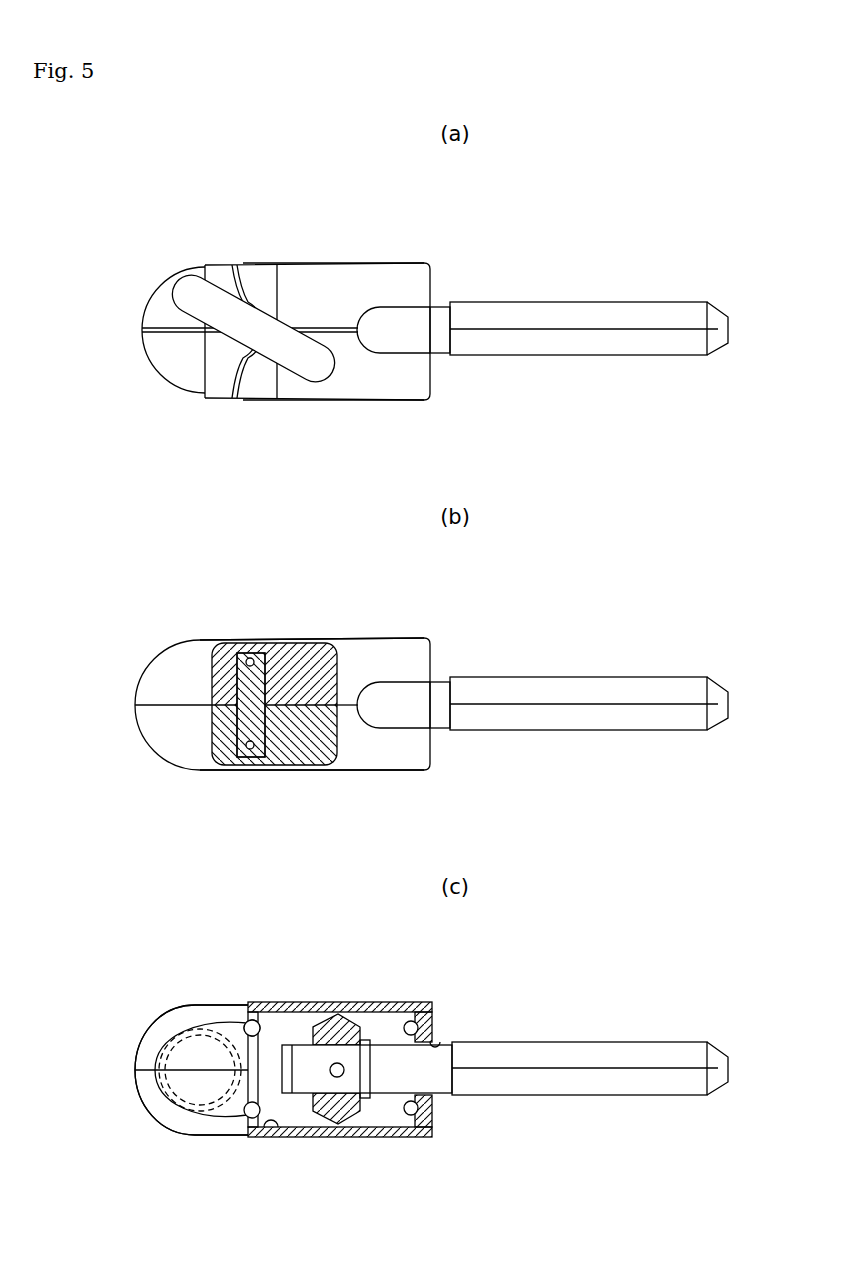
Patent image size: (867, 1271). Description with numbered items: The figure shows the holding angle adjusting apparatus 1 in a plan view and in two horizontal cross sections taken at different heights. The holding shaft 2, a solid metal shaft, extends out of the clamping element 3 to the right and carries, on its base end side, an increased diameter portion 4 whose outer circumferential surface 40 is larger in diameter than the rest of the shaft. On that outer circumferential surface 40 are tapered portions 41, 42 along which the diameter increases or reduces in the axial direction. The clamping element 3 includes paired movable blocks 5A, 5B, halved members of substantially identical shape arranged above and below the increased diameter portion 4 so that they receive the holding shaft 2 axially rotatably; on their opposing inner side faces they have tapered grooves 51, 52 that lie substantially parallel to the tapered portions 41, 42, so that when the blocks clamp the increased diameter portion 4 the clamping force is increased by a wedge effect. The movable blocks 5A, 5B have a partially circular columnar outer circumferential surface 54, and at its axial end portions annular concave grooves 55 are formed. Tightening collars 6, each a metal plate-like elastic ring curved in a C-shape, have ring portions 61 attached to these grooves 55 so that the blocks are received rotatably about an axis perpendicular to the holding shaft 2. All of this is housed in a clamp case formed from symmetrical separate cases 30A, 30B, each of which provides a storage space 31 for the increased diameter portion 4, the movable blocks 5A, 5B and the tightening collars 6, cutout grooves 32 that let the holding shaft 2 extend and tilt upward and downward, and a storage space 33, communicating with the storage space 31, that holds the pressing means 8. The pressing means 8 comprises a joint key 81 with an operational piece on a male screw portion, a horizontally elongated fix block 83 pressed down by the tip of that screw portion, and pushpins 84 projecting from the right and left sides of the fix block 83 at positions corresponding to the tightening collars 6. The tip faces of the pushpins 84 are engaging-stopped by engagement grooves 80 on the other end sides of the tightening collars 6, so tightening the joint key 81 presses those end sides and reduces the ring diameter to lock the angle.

In FIG. 5A, the holding angle adjusting apparatus 1 is at (557, 240).
In FIG. 5B, the holding angle adjusting apparatus 1 is at (557, 615).
In FIG. 5C, the holding angle adjusting apparatus 1 is at (557, 985).
In FIG. 5A, the holding shaft 2 is at (650, 310).
In FIG. 5B, the holding shaft 2 is at (650, 685).
In FIG. 5C, the holding shaft 2 is at (650, 1050).
In FIG. 5A, the clamping element 3 is at (302, 270).
In FIG. 5B, the clamping element 3 is at (302, 645).
In FIG. 5C, the clamping element 3 is at (272, 1002).
In FIG. 5C, the increased diameter portion 4 is at (337, 1110).
In FIG. 5A, the movable block 5A is at (400, 340).
In FIG. 5B, the movable block 5A is at (400, 715).
In FIG. 5C, the movable block 5B is at (402, 1123).
In FIG. 5C, the tightening collar 6 is at (473, 1066).
In FIG. 5A, the pressing means 8 is at (247, 295).
In FIG. 5B, the pressing means 8 is at (233, 685).
In FIG. 5C, the pressing means 8 is at (169, 1069).
In FIG. 5A, the separate case 30A is at (328, 258).
In FIG. 5B, the separate case 30A is at (328, 636).
In FIG. 5C, the separate case 30A is at (198, 1005).
In FIG. 5A, the separate case 30B is at (328, 400).
In FIG. 5B, the separate case 30B is at (328, 770).
In FIG. 5C, the separate case 30B is at (177, 1133).
In FIG. 5C, the storage space 31 is at (278, 1128).
In FIG. 5A, the cutout groove 32 is at (413, 308).
In FIG. 5B, the cutout groove 32 is at (413, 683).
In FIG. 5C, the cutout groove 32 is at (440, 1045).
In FIG. 5B, the storage space 33 is at (263, 765).
In FIG. 5C, the outer circumferential surface 40 is at (343, 1105).
In FIG. 5C, the tapered portion 41 is at (353, 1120).
In FIG. 5C, the tapered portion 42 is at (317, 1120).
In FIG. 5C, the tapered groove 51 is at (363, 1040).
In FIG. 5C, the tapered groove 52 is at (313, 1033).
In FIG. 5C, the outer circumferential surface 54 is at (420, 1105).
In FIG. 5C, the annular concave groove 55 is at (418, 1025).
In FIG. 5C, the ring portion 61 is at (432, 1010).
In FIG. 5C, the engagement groove 80 is at (248, 1022).
In FIG. 5A, the joint key 81 is at (188, 283).
In FIG. 5B, the fix block 83 is at (220, 660).
In FIG. 5B, the pushpin 84 is at (250, 660).
In FIG. 5C, the pushpin 84 is at (244, 1028).